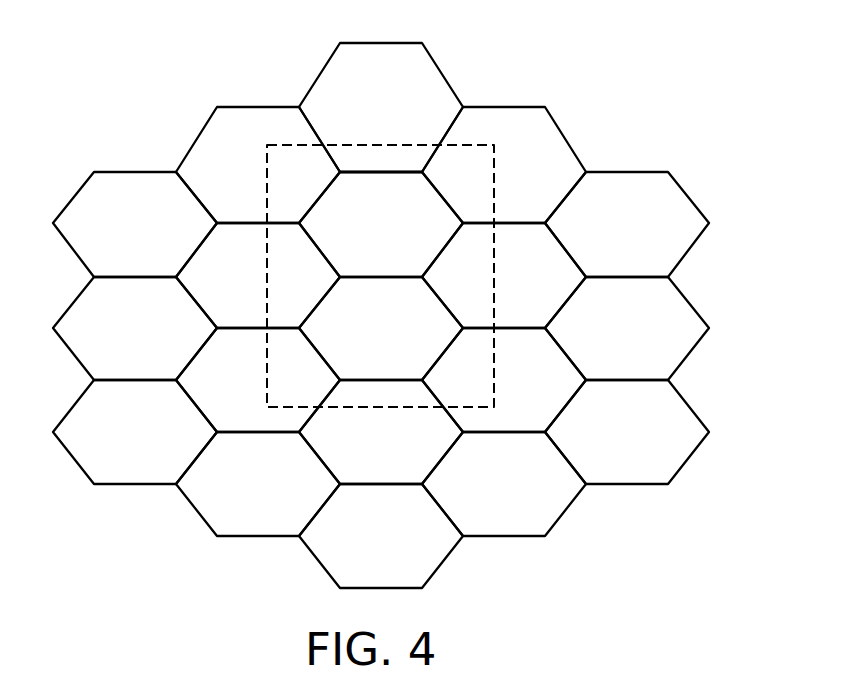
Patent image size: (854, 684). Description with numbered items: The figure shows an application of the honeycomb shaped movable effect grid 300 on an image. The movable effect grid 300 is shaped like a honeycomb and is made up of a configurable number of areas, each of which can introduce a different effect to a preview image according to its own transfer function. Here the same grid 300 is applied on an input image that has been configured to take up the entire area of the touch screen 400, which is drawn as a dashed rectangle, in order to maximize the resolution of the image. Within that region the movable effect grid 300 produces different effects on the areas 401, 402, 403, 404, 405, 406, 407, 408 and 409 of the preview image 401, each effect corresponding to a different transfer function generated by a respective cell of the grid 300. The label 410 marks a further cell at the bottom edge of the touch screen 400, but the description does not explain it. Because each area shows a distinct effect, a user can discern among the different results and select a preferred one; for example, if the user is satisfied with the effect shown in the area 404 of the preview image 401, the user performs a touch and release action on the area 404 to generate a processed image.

The movable effect grid 300 is at (430, 53).
The touch screen 400 is at (480, 145).
The preview image 401 is at (513, 183).
The area of preview image 402 is at (381, 158).
The area of preview image 403 is at (504, 165).
The area of preview image 404 is at (381, 224).
The area of preview image 405 is at (258, 275).
The area of preview image 406 is at (504, 275).
The area of preview image 407 is at (258, 380).
The area of preview image 408 is at (381, 328).
The area of preview image 409 is at (504, 380).
The cell 410 is at (381, 430).